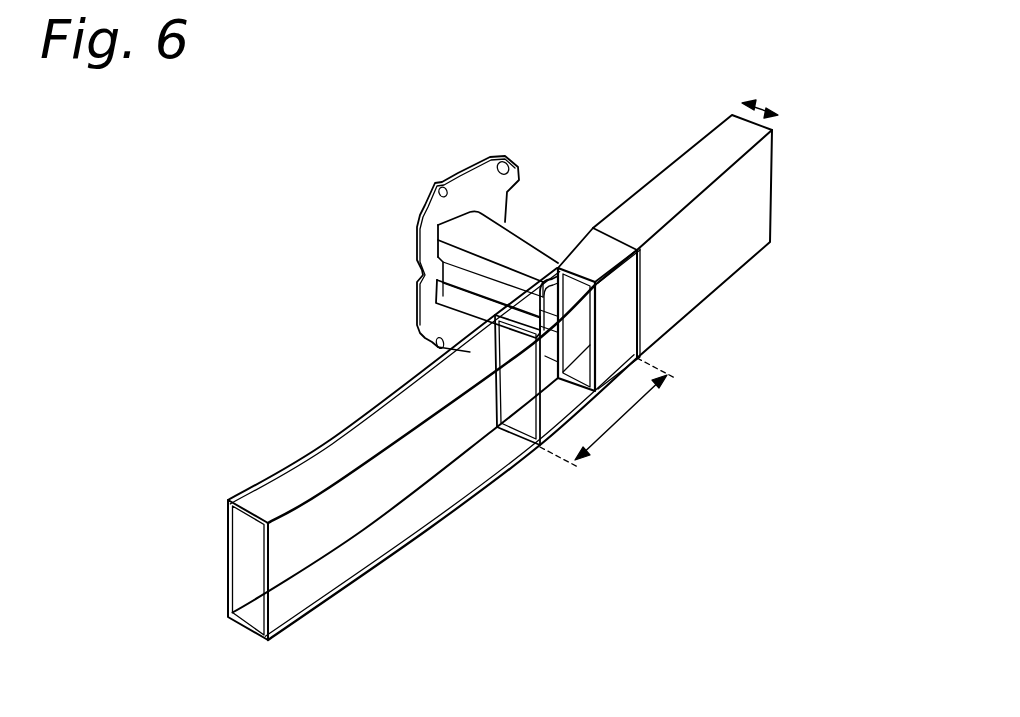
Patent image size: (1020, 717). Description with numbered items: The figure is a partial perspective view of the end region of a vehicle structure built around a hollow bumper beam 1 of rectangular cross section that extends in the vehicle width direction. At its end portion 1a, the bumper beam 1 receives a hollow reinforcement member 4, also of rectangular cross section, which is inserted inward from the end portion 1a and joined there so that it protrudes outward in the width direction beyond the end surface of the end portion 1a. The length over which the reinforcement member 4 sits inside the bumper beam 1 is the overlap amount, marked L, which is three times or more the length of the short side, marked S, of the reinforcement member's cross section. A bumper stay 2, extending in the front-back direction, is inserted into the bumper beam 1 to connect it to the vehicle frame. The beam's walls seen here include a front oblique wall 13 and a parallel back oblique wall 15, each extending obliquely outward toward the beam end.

The bumper beam 1 is at (313, 638).
The end portion 1a is at (680, 445).
The bumper stay 2 is at (538, 240).
The reinforcement member 4 is at (672, 166).
The front oblique wall 13 is at (490, 456).
The back oblique wall 15 is at (368, 408).